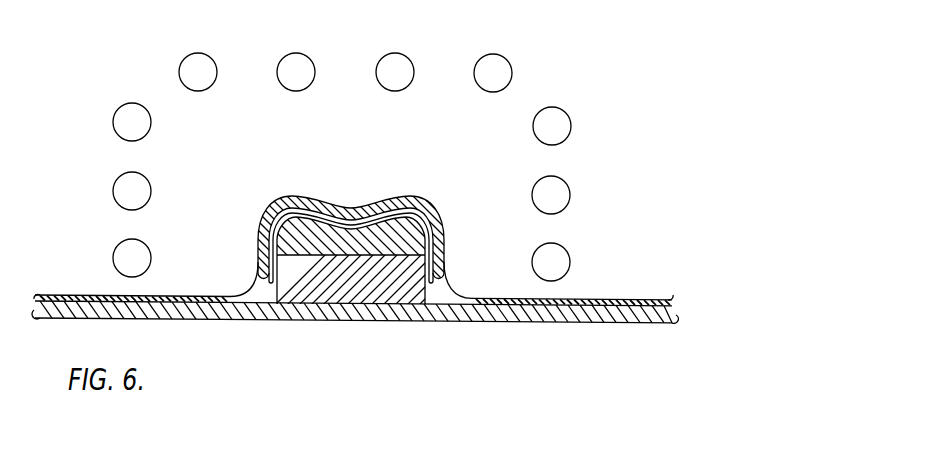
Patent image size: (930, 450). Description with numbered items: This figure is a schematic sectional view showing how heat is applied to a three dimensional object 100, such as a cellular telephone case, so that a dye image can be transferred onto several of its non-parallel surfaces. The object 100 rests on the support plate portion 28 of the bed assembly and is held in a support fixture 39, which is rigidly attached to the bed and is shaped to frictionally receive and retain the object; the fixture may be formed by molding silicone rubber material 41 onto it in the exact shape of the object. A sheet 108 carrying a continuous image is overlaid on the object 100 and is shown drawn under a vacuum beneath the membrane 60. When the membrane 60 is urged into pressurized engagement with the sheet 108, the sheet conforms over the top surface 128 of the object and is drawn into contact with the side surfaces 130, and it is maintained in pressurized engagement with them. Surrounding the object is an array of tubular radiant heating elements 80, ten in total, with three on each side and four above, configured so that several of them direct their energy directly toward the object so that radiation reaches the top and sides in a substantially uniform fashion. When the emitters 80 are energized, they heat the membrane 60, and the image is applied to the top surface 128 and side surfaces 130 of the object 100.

The radiant heating elements 80 is at (493, 68).
The top surface 128 is at (362, 214).
The side surfaces 130 is at (262, 232).
The sheet 108 is at (445, 238).
The support fixture 39 is at (293, 300).
The three dimensional object 100 is at (328, 222).
The silicone rubber material 41 is at (393, 248).
The support plate portion 28 is at (530, 320).
The membrane 60 is at (583, 305).